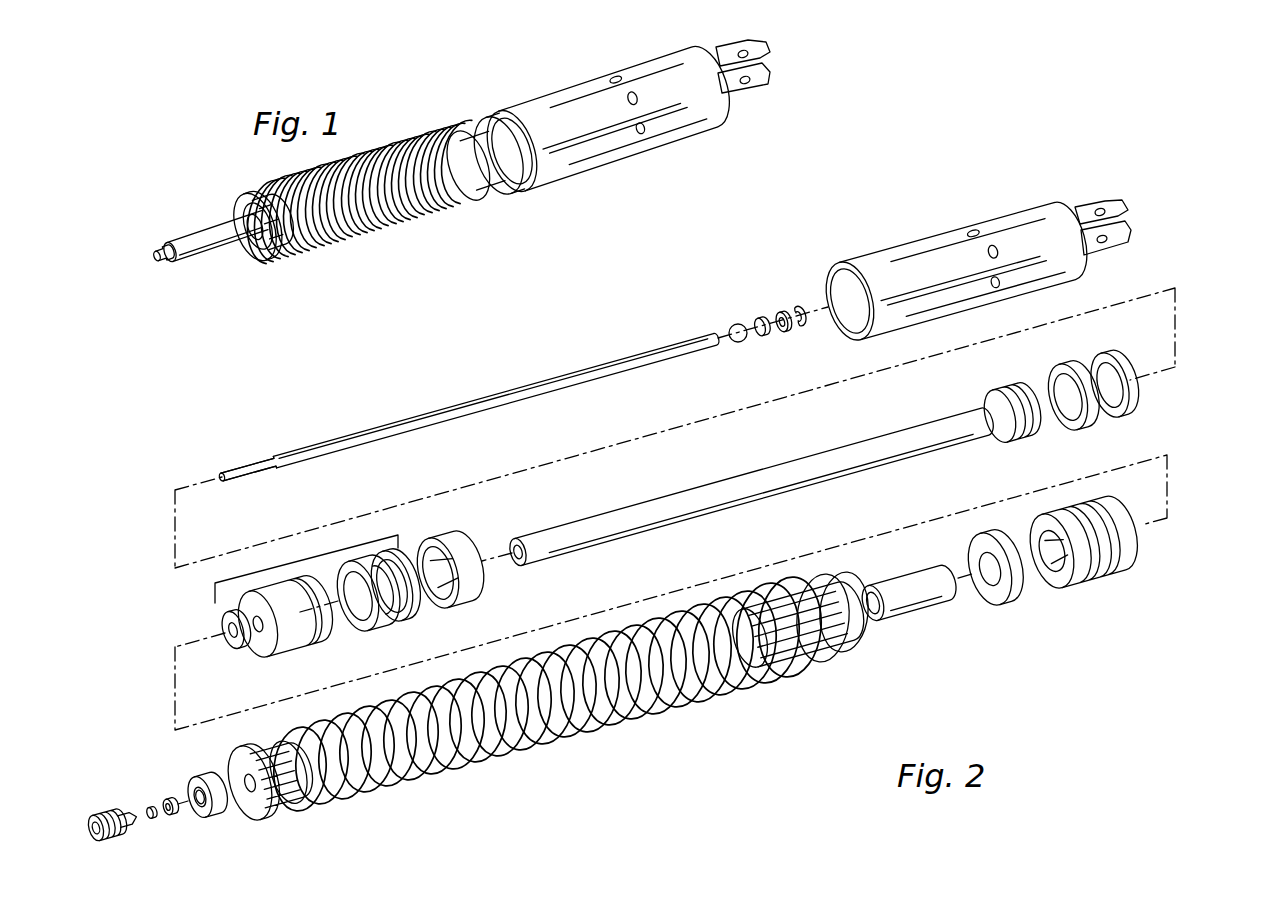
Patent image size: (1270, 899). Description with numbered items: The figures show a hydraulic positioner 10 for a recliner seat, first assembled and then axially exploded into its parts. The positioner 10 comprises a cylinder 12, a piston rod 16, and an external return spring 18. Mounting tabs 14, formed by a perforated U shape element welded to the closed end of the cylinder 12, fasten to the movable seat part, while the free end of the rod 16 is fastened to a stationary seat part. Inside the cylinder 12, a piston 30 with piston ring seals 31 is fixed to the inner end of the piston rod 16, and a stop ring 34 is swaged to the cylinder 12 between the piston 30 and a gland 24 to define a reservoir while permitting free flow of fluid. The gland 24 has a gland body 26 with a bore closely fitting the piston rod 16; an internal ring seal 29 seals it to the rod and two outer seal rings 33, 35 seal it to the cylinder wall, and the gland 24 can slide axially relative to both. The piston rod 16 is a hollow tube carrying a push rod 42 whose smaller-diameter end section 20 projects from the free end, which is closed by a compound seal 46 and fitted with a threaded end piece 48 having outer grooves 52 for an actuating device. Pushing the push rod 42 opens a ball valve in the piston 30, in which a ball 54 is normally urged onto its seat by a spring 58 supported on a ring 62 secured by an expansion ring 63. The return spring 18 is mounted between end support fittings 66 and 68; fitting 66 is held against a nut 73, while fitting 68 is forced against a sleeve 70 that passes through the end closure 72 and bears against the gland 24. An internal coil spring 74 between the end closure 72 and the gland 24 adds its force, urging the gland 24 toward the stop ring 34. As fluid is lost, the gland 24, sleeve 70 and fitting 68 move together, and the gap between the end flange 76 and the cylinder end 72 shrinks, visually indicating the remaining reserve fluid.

In FIG. 1, the hydraulic positioner 10 is at (494, 92).
In FIG. 2, the hydraulic positioner 10 is at (1206, 485).
In FIG. 1, the cylinder 12 is at (589, 98).
In FIG. 2, the cylinder 12 is at (993, 232).
In FIG. 1, the mounting tabs 14 is at (763, 85).
In FIG. 2, the mounting tabs 14 is at (1131, 214).
In FIG. 1, the piston rod 16 is at (210, 262).
In FIG. 2, the piston rod 16 is at (805, 466).
In FIG. 1, the return spring 18 is at (374, 226).
In FIG. 2, the return spring 18 is at (584, 742).
In FIG. 1, the end section 20 is at (155, 256).
In FIG. 2, the end section 20 is at (240, 468).
In FIG. 2, the gland 24 is at (214, 584).
In FIG. 2, the gland body 26 is at (302, 645).
In FIG. 2, the internal ring seal 29 is at (235, 652).
In FIG. 2, the piston 30 is at (1020, 442).
In FIG. 2, the piston ring seals 31 is at (1126, 405).
In FIG. 2, the outer seal ring 33 is at (395, 630).
In FIG. 2, the stop ring 34 is at (470, 598).
In FIG. 2, the outer seal ring 35 is at (410, 614).
In FIG. 2, the push rod 42 is at (482, 404).
In FIG. 2, the compound seal 46 is at (171, 802).
In FIG. 2, the threaded end piece 48 is at (104, 842).
In FIG. 2, the outer grooves 52 is at (118, 812).
In FIG. 2, the ball 54 is at (742, 326).
In FIG. 2, the spring 58 is at (762, 337).
In FIG. 2, the ring 62 is at (784, 333).
In FIG. 2, the expansion ring 63 is at (802, 308).
In FIG. 2, the end support fitting 66 is at (272, 802).
In FIG. 2, the end support fitting 68 is at (830, 660).
In FIG. 2, the sleeve 70 is at (926, 620).
In FIG. 2, the end closure 72 is at (1008, 604).
In FIG. 2, the nut 73 is at (220, 812).
In FIG. 2, the internal coil spring 74 is at (1108, 592).
In FIG. 2, the end flange 76 is at (855, 652).